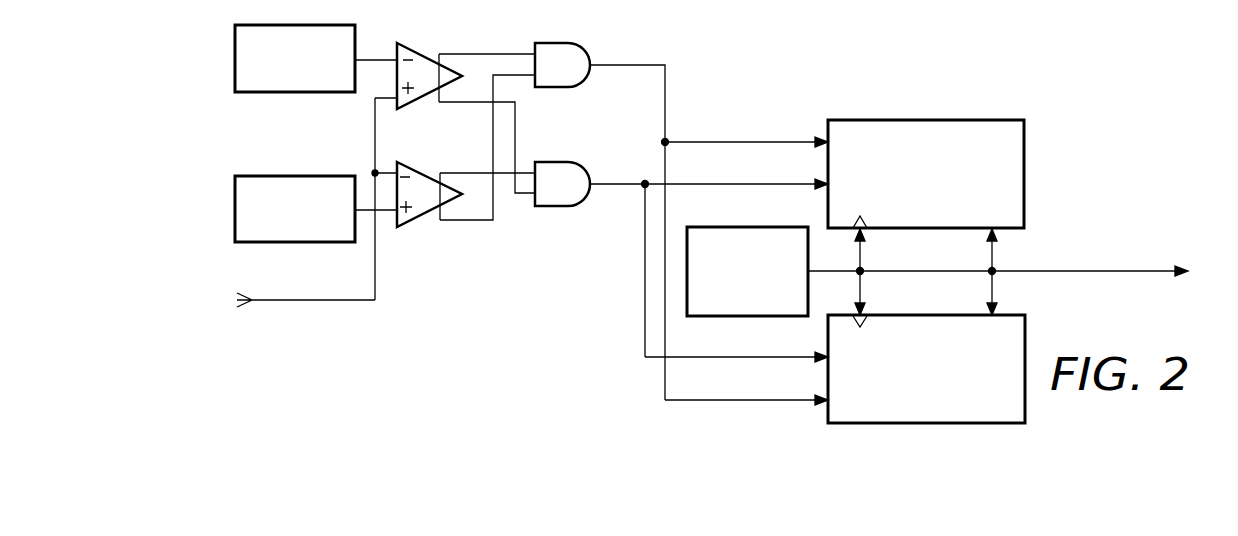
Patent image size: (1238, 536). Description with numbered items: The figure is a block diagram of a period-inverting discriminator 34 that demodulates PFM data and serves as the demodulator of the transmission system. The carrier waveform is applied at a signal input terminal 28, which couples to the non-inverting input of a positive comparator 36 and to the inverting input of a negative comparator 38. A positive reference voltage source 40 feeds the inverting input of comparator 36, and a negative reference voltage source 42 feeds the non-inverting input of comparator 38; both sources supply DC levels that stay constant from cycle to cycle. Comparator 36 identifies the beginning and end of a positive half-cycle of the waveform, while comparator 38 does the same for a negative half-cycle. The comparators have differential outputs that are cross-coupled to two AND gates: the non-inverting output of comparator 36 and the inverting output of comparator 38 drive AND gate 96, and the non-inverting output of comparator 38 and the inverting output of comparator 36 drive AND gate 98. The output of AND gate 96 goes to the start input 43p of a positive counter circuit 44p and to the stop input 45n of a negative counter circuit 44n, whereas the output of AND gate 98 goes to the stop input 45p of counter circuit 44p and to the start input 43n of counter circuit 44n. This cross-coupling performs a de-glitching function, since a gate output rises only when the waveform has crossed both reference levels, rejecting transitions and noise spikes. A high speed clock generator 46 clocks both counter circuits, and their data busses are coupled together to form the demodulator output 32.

The signal input terminal 28 is at (282, 301).
The output 32 is at (1090, 271).
The period-inverting discriminator 34 is at (400, 380).
The positive comparator 36 is at (418, 97).
The negative comparator 38 is at (418, 215).
The positive reference voltage source 40 is at (235, 61).
The negative reference voltage source 42 is at (235, 215).
The start input 43p is at (800, 141).
The start input 43n is at (805, 356).
The positive counter circuit 44p is at (983, 119).
The negative counter circuit 44n is at (932, 314).
The stop input 45p is at (802, 183).
The stop input 45n is at (803, 398).
The high speed clock generator 46 is at (758, 227).
The AND gate 96 is at (573, 88).
The AND gate 98 is at (573, 207).